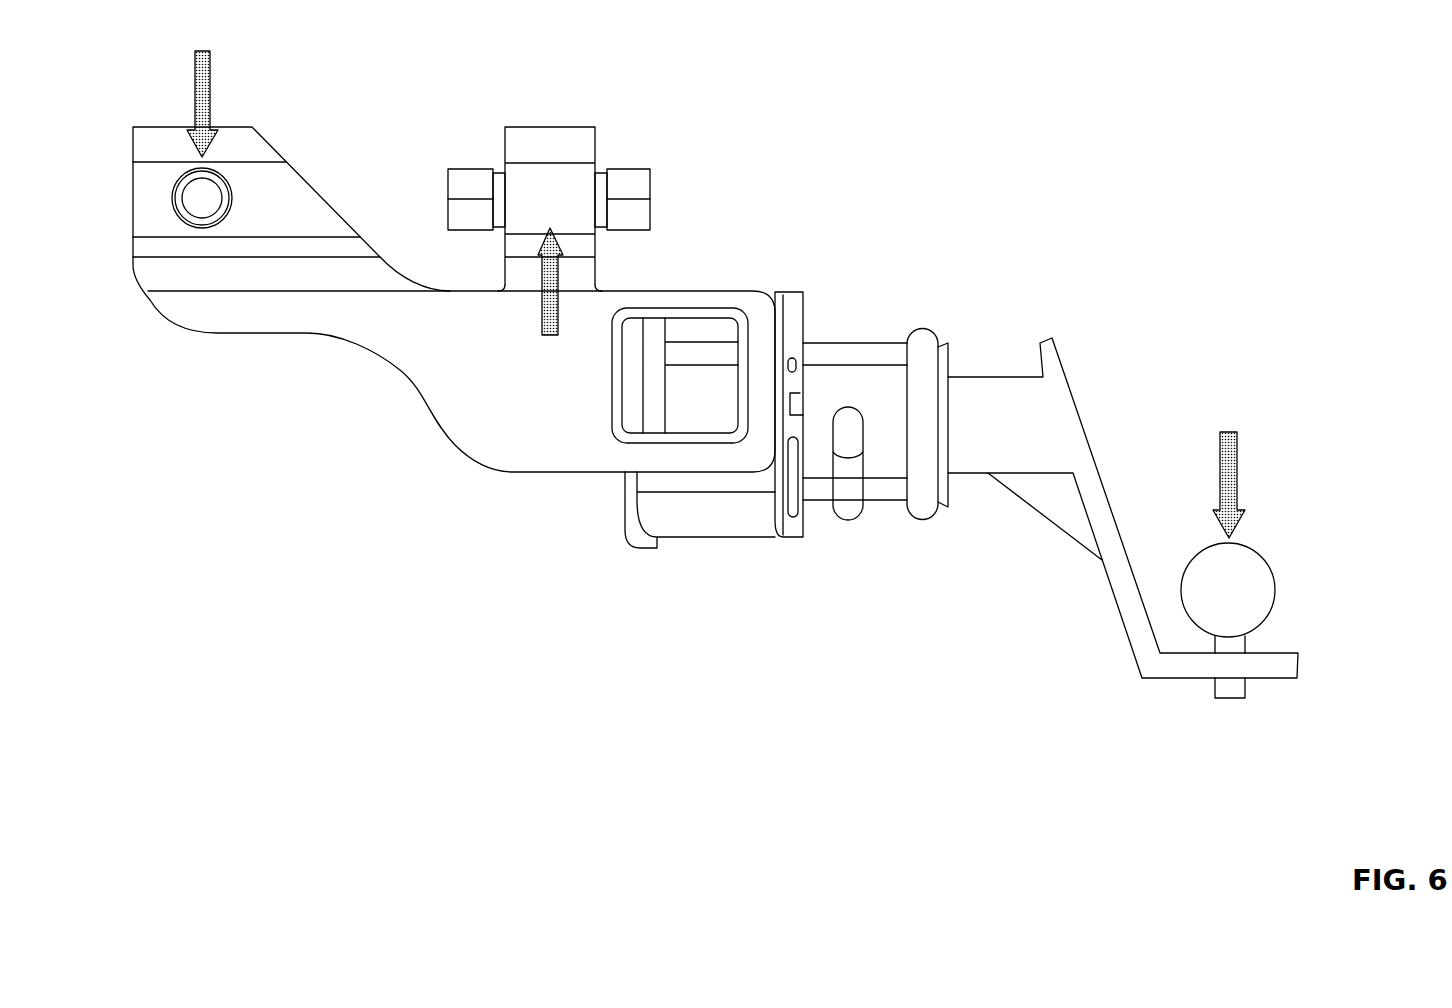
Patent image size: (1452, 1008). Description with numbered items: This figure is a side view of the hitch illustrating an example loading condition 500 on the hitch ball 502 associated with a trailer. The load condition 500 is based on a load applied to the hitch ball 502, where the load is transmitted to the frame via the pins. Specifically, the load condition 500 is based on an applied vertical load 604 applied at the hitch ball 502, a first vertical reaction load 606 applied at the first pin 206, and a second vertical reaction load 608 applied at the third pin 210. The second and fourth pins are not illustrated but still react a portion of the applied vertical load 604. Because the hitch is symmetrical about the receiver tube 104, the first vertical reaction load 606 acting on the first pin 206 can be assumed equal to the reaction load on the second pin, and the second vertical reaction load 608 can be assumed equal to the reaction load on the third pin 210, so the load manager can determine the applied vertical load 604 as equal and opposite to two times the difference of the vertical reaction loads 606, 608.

The loading condition 500 is at (1018, 90).
The first pin 206 is at (172, 192).
The third pin 210 is at (637, 170).
The receiver tube 104 is at (922, 330).
The first vertical reaction load 606 is at (196, 65).
The second vertical reaction load 608 is at (541, 308).
The applied vertical load 604 is at (1238, 455).
The hitch ball 502 is at (1262, 555).